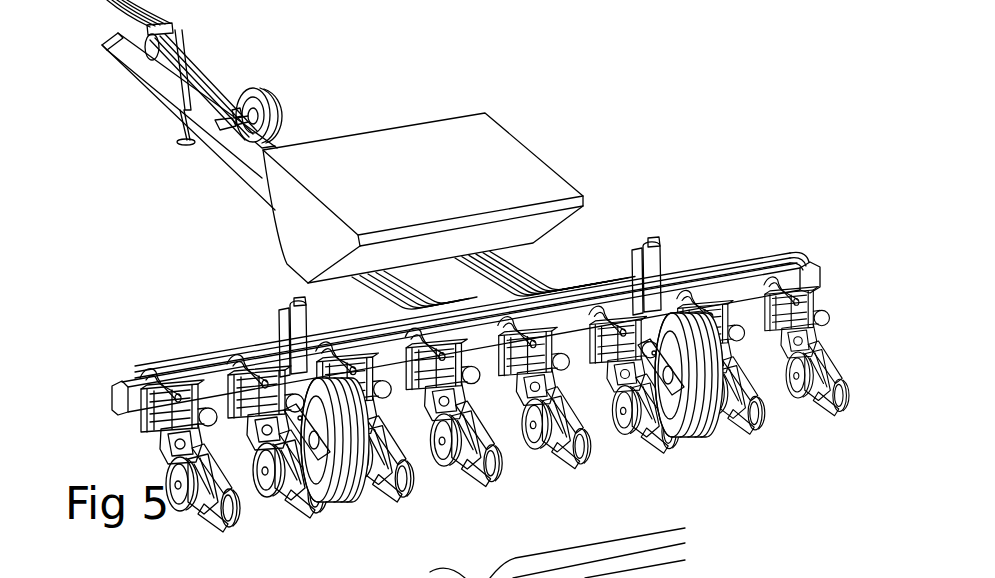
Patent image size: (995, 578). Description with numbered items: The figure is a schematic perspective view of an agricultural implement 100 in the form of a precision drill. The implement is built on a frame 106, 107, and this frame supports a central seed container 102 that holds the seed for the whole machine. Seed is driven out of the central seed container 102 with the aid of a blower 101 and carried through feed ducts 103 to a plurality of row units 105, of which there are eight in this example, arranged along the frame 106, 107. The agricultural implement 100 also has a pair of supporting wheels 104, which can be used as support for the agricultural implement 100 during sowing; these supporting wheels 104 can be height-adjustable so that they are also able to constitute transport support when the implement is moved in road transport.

The agricultural implement 100 is at (737, 96).
The blower 101 is at (264, 97).
The central seed container 102 is at (497, 124).
The feed ducts 103 is at (498, 272).
The supporting wheels 104 is at (709, 432).
The row units 105 is at (193, 500).
The frame 106 is at (248, 170).
The frame 107 is at (790, 262).